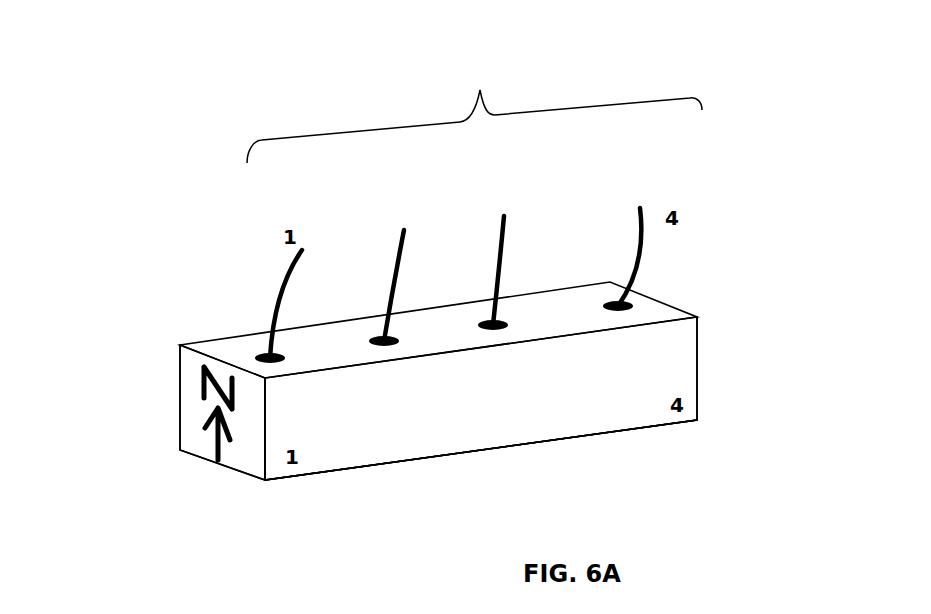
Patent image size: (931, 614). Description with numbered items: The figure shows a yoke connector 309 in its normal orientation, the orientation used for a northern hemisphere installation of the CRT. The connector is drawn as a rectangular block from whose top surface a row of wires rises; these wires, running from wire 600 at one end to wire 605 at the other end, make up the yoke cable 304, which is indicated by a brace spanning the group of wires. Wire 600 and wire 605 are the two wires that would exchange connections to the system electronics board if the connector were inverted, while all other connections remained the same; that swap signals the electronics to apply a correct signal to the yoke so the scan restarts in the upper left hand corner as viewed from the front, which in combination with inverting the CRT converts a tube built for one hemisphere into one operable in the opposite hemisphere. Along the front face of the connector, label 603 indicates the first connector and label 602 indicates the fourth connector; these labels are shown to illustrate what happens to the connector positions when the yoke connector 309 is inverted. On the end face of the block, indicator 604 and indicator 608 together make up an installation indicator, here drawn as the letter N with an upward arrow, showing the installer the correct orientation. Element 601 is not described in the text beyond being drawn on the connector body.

The yoke cable 304 is at (474, 186).
The wire 600 is at (302, 237).
The wire 605 is at (643, 187).
The magnet block 601 is at (712, 330).
The label 602 is at (700, 407).
The yoke connector 309 is at (572, 412).
The label 603 is at (312, 451).
The indicator 604 is at (193, 365).
The indicator 608 is at (203, 438).